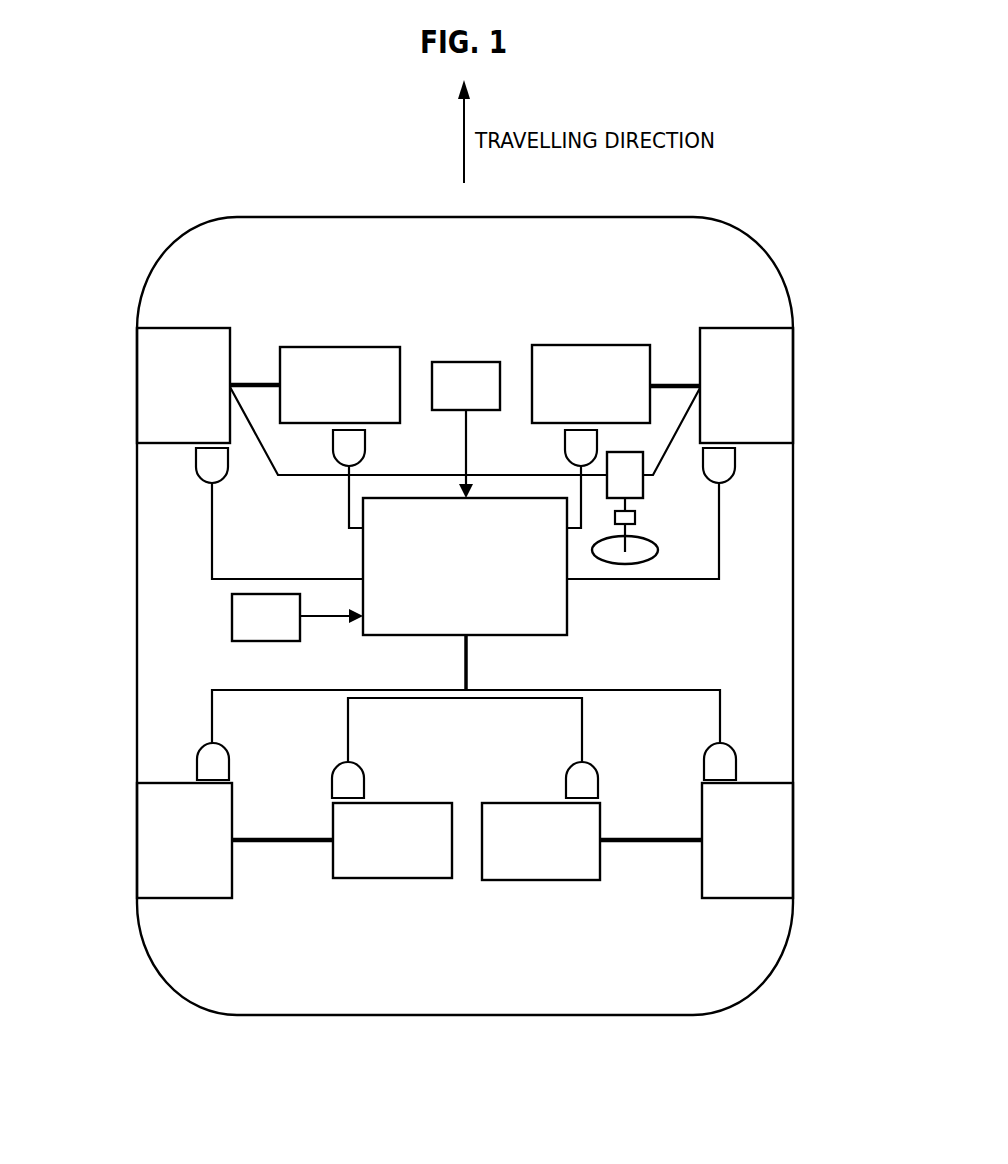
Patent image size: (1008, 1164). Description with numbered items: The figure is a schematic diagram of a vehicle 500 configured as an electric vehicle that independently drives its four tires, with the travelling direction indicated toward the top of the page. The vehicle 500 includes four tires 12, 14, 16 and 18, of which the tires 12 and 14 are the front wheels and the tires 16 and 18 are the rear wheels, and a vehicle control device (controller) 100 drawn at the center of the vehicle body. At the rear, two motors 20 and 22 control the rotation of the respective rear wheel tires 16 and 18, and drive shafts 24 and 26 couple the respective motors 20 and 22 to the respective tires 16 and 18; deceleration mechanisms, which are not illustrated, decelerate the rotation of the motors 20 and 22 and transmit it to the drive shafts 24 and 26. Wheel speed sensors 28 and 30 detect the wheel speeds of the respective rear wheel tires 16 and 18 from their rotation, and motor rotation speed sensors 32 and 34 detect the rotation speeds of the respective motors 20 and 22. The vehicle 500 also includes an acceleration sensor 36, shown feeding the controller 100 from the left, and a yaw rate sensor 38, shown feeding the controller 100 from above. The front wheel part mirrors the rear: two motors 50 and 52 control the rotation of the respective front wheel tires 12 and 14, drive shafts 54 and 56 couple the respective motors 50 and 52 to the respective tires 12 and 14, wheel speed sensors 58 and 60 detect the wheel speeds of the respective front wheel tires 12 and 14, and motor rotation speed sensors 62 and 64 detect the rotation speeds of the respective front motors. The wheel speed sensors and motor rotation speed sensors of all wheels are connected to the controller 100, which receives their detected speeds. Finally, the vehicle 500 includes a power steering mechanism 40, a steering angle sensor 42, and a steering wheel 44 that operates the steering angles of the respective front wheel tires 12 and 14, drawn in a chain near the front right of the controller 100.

The tire 12 is at (158, 354).
The tire 14 is at (773, 354).
The tire 16 is at (158, 881).
The tire 18 is at (775, 884).
The motor 20 is at (395, 879).
The motor 22 is at (543, 881).
The drive shaft 24 is at (287, 845).
The drive shaft 26 is at (655, 845).
The wheel speed sensor 28 is at (202, 745).
The wheel speed sensor 30 is at (726, 745).
The motor rotation speed sensor 32 is at (341, 765).
The motor rotation speed sensor 34 is at (594, 765).
The acceleration sensor 36 is at (232, 616).
The yaw rate sensor 38 is at (463, 362).
The power steering mechanism 40 is at (643, 485).
The steering angle sensor 42 is at (635, 517).
The steering wheel 44 is at (658, 549).
The motor 50 is at (338, 347).
The motor 52 is at (585, 345).
The drive shaft 54 is at (254, 381).
The drive shaft 56 is at (670, 382).
The wheel speed sensor 58 is at (196, 449).
The wheel speed sensor 60 is at (735, 457).
The motor rotation speed sensor 62 is at (365, 437).
The motor rotation speed sensor 64 is at (565, 437).
The vehicle control device 100 is at (567, 613).
The vehicle 500 is at (744, 1123).